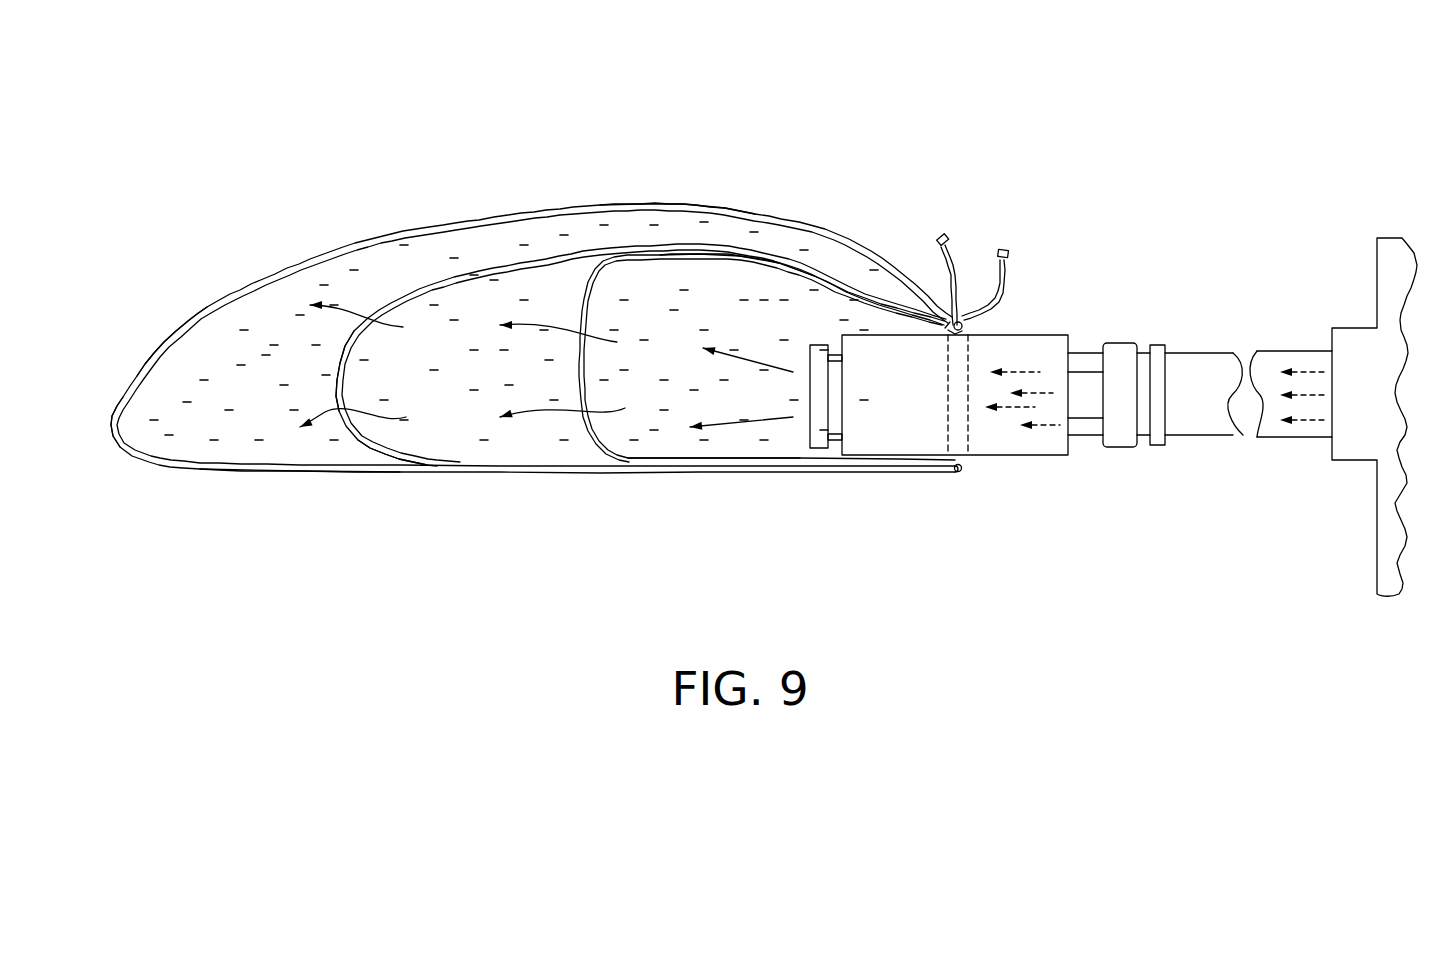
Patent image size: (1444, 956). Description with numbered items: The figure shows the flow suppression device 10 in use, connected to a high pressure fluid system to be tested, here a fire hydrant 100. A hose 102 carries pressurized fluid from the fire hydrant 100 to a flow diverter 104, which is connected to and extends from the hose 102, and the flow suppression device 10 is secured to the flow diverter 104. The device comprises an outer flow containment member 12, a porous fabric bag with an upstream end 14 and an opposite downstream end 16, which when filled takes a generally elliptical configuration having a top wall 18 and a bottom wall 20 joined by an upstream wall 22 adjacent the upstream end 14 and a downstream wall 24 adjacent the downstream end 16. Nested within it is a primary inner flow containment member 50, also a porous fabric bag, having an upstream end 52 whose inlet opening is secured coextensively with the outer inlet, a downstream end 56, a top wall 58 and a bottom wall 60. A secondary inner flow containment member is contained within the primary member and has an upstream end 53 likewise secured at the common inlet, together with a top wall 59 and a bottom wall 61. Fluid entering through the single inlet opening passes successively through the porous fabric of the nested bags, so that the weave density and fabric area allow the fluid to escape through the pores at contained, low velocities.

The flow suppression device 10 is at (843, 160).
The outer flow containment member 12 is at (365, 244).
The upstream end 14 is at (965, 302).
The downstream end 16 is at (116, 417).
The top wall 18 is at (680, 206).
The bottom wall 20 is at (270, 474).
The upstream wall 22 is at (952, 300).
The downstream wall 24 is at (132, 378).
The primary inner flow containment member 50 is at (507, 266).
The upstream end 52 is at (942, 321).
The upstream end 53 is at (932, 322).
The downstream end 56 is at (340, 372).
The top wall 58 is at (765, 260).
The top wall 59 is at (620, 266).
The bottom wall 60 is at (403, 466).
The bottom wall 61 is at (692, 472).
The fire hydrant 100 is at (1395, 238).
The hose 102 is at (1285, 350).
The flow diverter 104 is at (1043, 335).